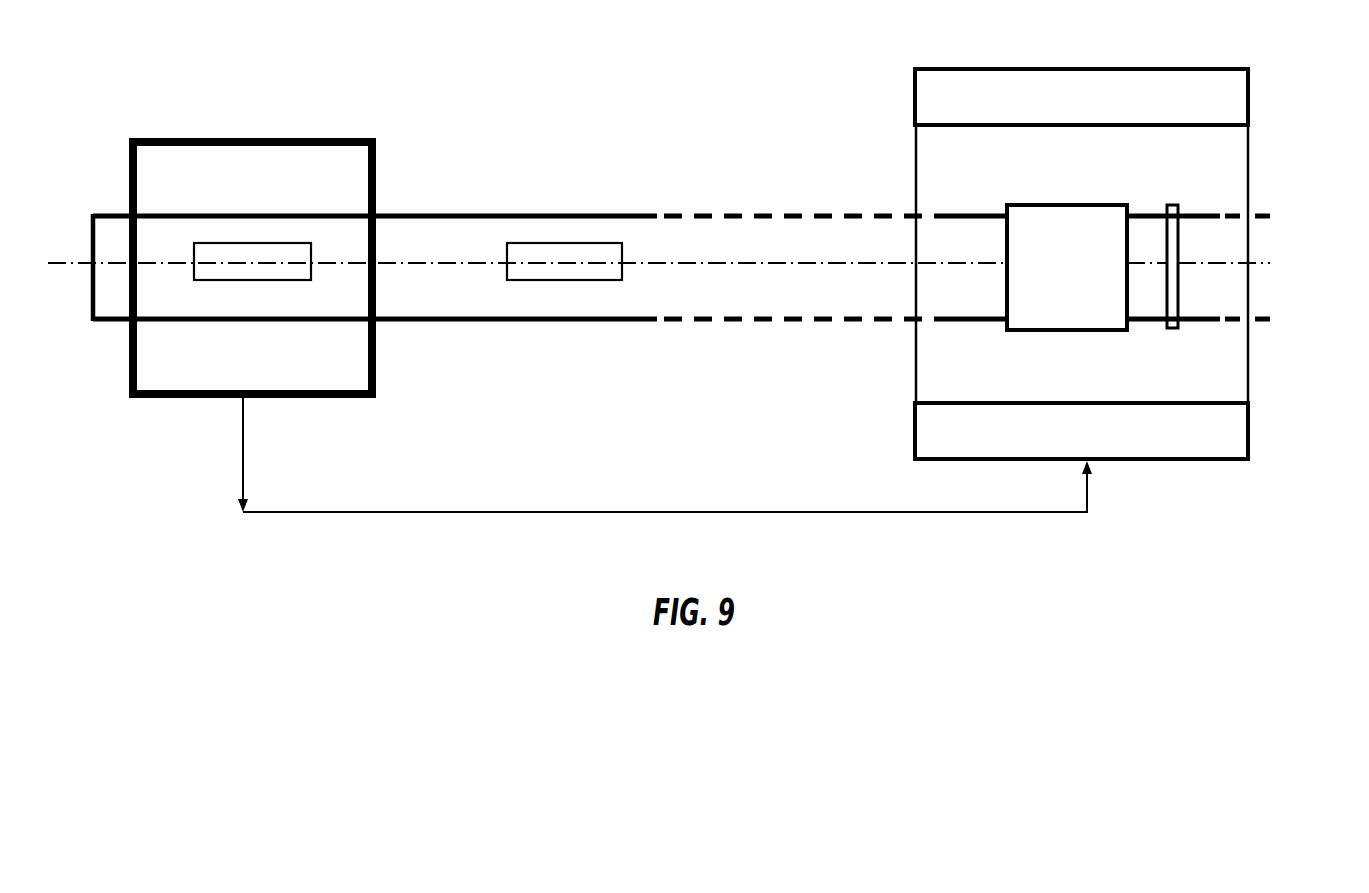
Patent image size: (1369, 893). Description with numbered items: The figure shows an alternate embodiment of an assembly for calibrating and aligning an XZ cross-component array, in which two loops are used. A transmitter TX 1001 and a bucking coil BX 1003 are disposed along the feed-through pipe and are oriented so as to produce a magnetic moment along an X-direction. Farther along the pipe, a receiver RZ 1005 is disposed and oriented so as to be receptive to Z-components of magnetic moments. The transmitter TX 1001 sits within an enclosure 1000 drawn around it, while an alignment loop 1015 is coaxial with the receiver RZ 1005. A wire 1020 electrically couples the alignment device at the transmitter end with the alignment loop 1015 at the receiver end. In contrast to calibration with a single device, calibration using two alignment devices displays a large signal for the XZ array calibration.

The transmitter unit TX 1000 is at (290, 138).
The transmitter TX 1001 is at (227, 255).
The bucking coil BX 1003 is at (592, 253).
The receiver RZ 1005 is at (1097, 301).
The alignment loop 1015 is at (1160, 80).
The wire 1020 is at (859, 512).